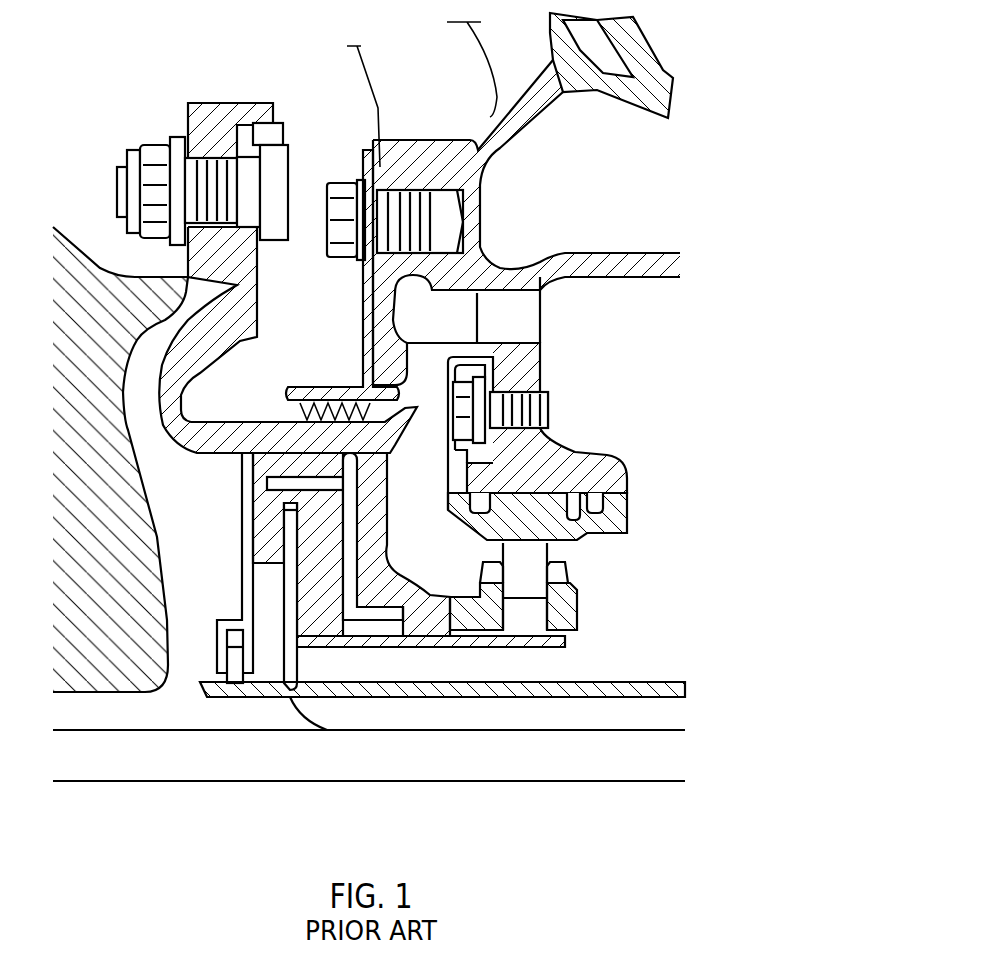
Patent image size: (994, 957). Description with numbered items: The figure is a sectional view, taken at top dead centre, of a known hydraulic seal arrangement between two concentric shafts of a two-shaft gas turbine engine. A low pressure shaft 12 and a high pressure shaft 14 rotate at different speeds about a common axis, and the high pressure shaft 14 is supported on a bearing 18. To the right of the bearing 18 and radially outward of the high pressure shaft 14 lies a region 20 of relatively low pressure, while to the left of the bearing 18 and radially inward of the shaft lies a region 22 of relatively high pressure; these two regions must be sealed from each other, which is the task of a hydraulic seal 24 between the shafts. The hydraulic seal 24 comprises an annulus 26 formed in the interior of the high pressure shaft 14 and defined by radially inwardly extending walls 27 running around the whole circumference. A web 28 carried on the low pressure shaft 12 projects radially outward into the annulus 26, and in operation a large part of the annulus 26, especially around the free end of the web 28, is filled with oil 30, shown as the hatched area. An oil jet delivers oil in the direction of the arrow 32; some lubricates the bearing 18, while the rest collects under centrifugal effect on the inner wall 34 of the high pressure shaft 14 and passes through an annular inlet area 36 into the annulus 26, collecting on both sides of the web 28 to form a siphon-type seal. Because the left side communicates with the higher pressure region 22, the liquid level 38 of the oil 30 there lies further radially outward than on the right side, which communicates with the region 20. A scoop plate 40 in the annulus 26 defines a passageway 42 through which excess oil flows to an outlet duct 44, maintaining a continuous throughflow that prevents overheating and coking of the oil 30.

The low pressure shaft 12 is at (633, 687).
The high pressure shaft 14 is at (480, 617).
The bearing 18 is at (540, 577).
The region of relatively low pressure 20 is at (706, 528).
The region of relatively high pressure 22 is at (150, 720).
The hydraulic seal 24 is at (270, 500).
The annulus 26 is at (260, 543).
The radially inwardly extending walls 27 is at (247, 517).
The web 28 is at (290, 613).
The oil 30 is at (331, 565).
The arrow 32 is at (523, 663).
The inner wall 34 is at (430, 620).
The annular inlet area 36 is at (320, 617).
The liquid level 38 is at (270, 562).
The scoop plate 40 is at (280, 482).
The passageway 42 is at (314, 462).
The outlet duct 44 is at (393, 572).